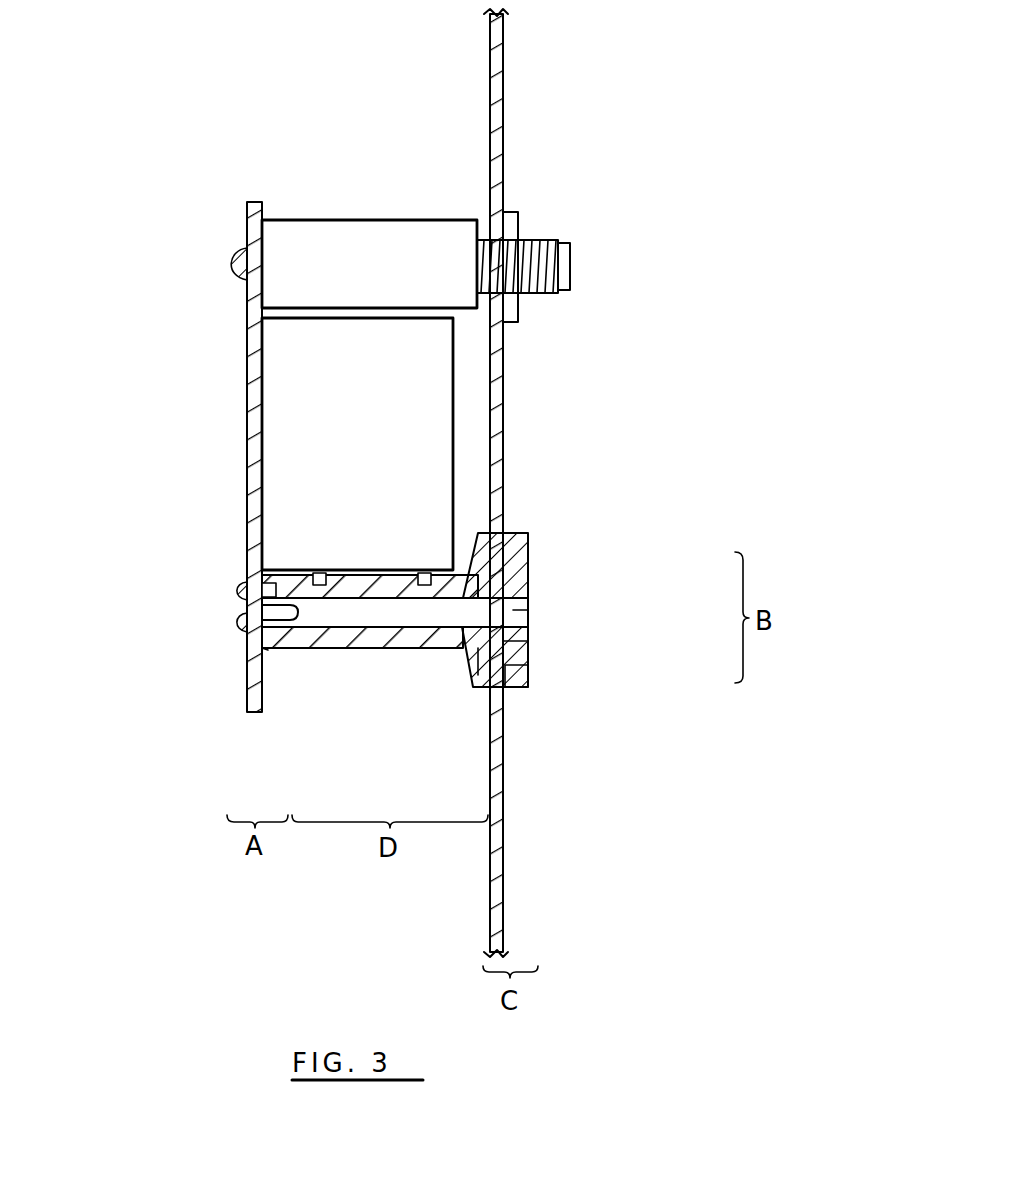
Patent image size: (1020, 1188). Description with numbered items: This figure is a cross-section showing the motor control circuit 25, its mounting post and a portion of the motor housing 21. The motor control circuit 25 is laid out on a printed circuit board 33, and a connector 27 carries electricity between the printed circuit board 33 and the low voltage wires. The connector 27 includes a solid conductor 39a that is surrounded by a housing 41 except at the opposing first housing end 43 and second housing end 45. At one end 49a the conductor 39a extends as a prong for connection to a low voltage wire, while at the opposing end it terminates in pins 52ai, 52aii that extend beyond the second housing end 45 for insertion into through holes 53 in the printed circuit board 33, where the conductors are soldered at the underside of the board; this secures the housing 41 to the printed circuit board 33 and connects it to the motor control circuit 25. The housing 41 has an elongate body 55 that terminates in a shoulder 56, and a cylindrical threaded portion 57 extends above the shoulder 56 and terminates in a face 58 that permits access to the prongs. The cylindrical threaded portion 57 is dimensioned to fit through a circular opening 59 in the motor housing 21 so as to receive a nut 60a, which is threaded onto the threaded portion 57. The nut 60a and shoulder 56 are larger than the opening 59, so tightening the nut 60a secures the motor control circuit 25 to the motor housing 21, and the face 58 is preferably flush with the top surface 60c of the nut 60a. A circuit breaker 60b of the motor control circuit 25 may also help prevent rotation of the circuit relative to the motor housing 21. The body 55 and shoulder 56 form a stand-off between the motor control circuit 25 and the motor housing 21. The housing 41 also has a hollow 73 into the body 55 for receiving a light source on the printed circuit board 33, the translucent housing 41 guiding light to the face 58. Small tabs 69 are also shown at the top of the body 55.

The motor housing 21 is at (503, 135).
The motor control circuit 25 is at (333, 190).
The connector 27 is at (572, 610).
The printed circuit board 33 is at (248, 715).
The conductor 39a is at (408, 645).
The housing 41 is at (375, 655).
The first housing end 43 is at (587, 582).
The second housing end 45 is at (210, 643).
The conductor end 49a is at (513, 610).
The pin 52ai is at (238, 618).
The pin 52aii is at (235, 586).
The through hole 53 is at (245, 588).
The elongate body 55 is at (378, 573).
The shoulder 56 is at (478, 675).
The cylindrical threaded portion 57 is at (530, 663).
The face 58 is at (528, 641).
The circular opening 59 is at (500, 520).
The nut 60a is at (520, 690).
The circuit breaker 60b is at (570, 272).
The top surface of nut 60c is at (530, 578).
The locating tabs 69 is at (320, 574).
The hollow 73 is at (320, 647).